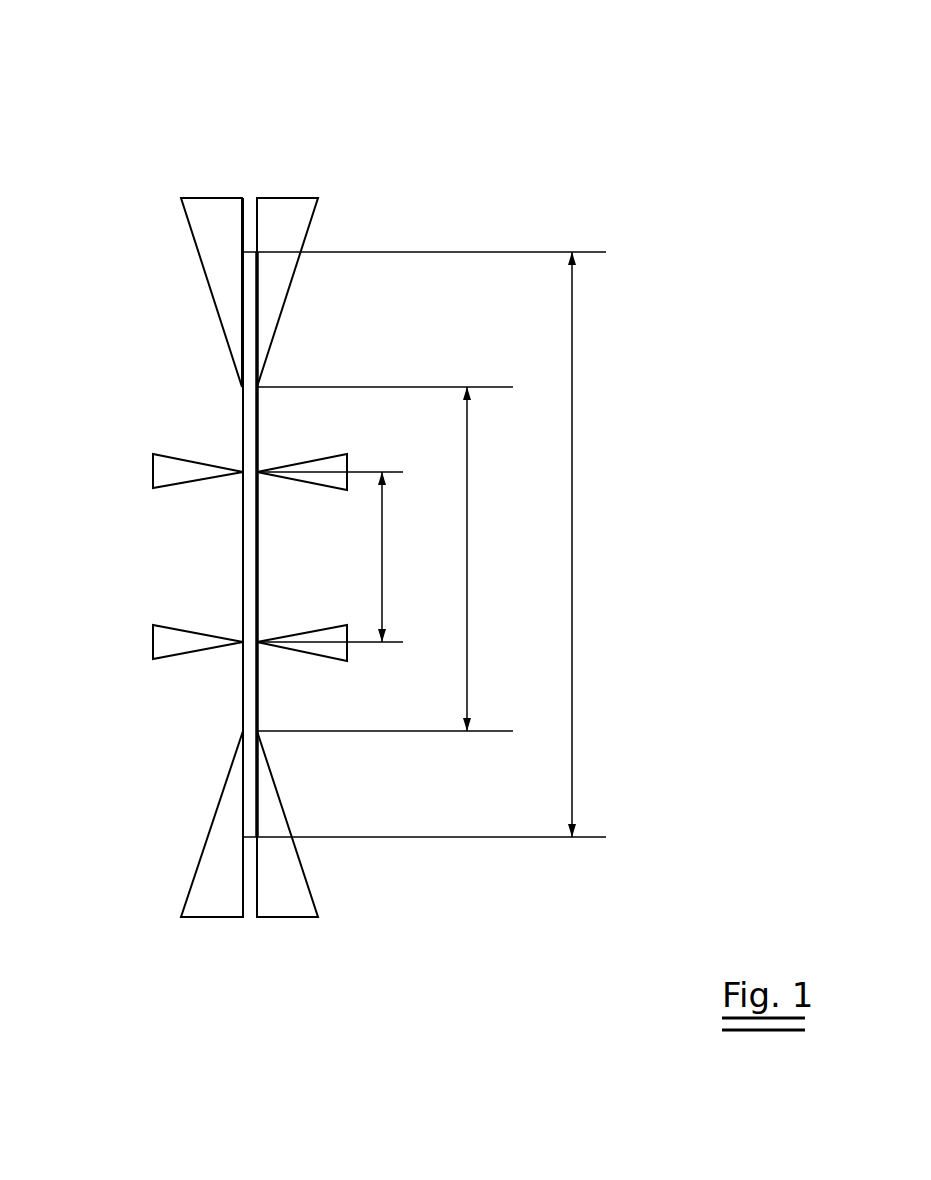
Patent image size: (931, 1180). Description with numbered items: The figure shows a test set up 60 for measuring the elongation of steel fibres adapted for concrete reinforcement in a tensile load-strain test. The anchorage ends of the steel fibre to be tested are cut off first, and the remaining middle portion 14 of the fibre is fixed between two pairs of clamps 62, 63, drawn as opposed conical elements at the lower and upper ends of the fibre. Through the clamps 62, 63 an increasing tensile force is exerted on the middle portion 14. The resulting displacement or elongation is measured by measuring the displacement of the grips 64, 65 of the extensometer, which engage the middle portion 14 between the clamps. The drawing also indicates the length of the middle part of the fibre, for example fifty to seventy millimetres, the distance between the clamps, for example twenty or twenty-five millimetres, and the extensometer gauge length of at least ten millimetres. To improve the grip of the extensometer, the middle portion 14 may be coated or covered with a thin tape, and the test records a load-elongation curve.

The test set up 60 is at (481, 110).
The middle portion 14 is at (250, 405).
The clamp 63 is at (287, 217).
The clamp 62 is at (292, 893).
The grip of the extensometer 65 is at (322, 478).
The grip of the extensometer 64 is at (325, 650).